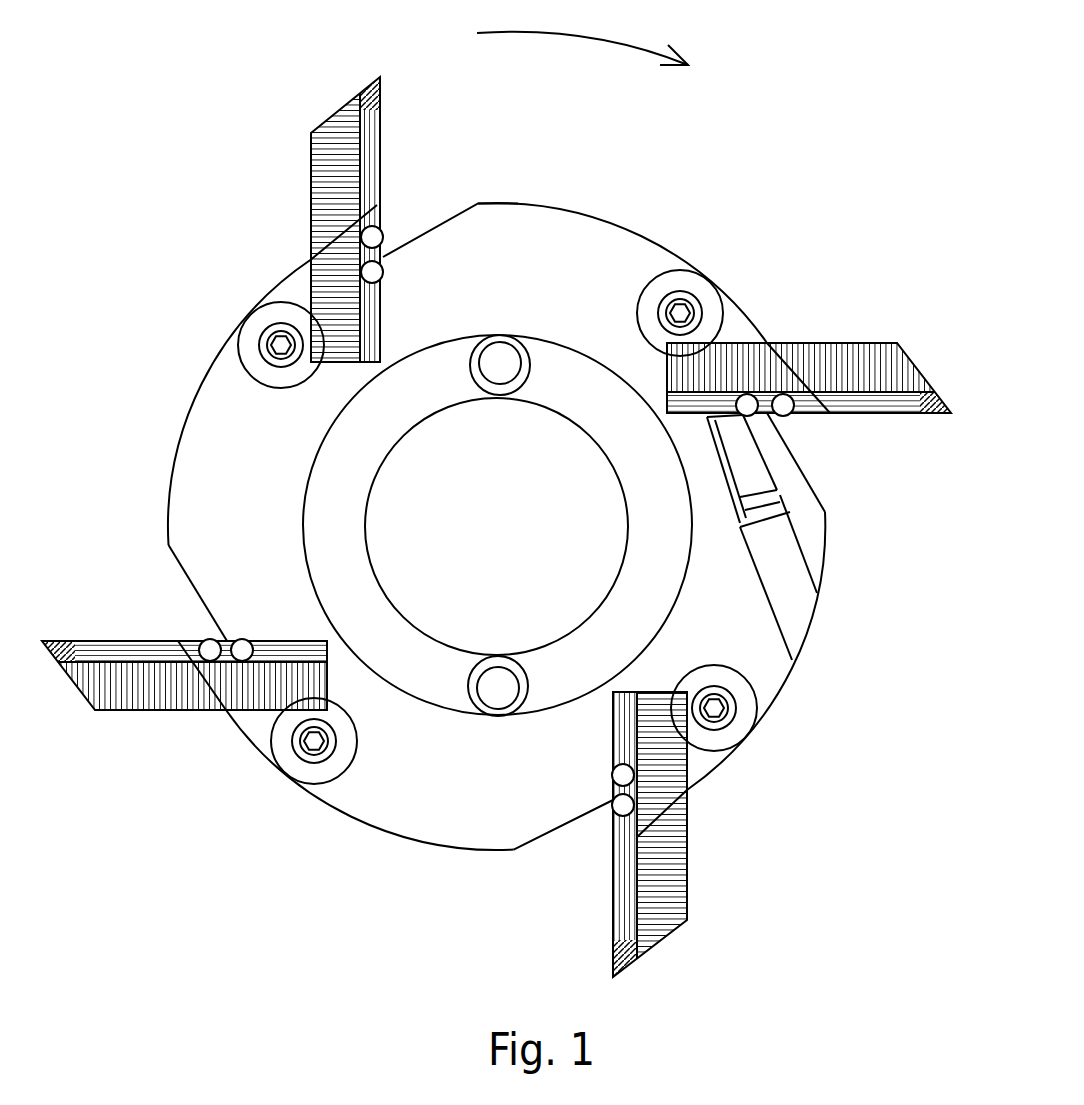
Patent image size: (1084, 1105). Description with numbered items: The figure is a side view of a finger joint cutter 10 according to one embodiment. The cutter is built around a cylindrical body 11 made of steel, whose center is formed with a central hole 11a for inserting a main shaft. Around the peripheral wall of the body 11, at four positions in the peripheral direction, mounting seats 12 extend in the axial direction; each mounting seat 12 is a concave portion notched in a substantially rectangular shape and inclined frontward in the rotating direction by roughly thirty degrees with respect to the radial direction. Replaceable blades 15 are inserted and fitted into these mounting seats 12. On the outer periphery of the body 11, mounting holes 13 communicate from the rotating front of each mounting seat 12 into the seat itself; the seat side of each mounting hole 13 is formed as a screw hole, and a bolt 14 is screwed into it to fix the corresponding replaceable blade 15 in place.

The finger joint cutter 10 is at (497, 493).
The body 11 is at (496, 500).
The central hole 11a is at (457, 405).
The mounting seat 12 is at (383, 257).
The mounting hole 13 is at (802, 548).
The bolt 14 is at (787, 513).
The replaceable blade 15 is at (343, 100).